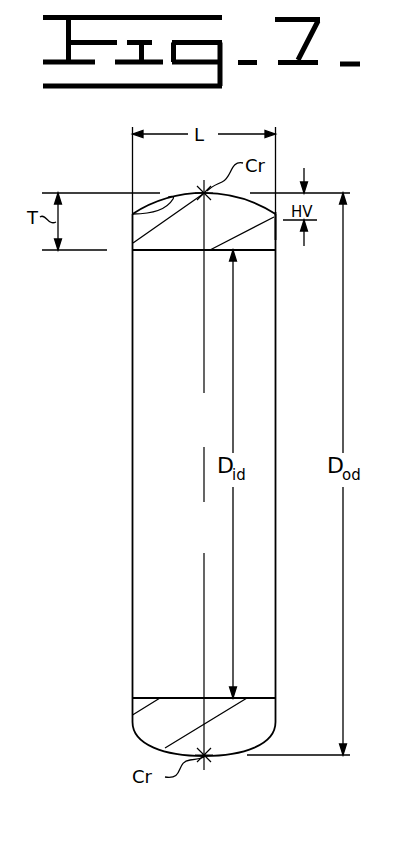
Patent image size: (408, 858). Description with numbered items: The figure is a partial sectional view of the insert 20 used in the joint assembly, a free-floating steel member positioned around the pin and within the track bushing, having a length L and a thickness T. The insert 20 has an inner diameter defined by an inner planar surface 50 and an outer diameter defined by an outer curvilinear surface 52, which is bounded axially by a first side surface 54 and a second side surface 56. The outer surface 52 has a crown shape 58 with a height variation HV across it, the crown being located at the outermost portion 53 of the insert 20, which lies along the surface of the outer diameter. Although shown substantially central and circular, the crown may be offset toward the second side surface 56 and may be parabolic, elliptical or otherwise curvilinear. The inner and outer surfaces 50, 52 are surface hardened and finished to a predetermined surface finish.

The insert 20 is at (116, 473).
The inner planar surface 50 is at (160, 250).
The outer curvilinear surface 52 is at (135, 215).
The outermost portion 53 is at (131, 747).
The first side surface 54 is at (132, 233).
The second side surface 56 is at (276, 235).
The crown shape 58 is at (203, 217).